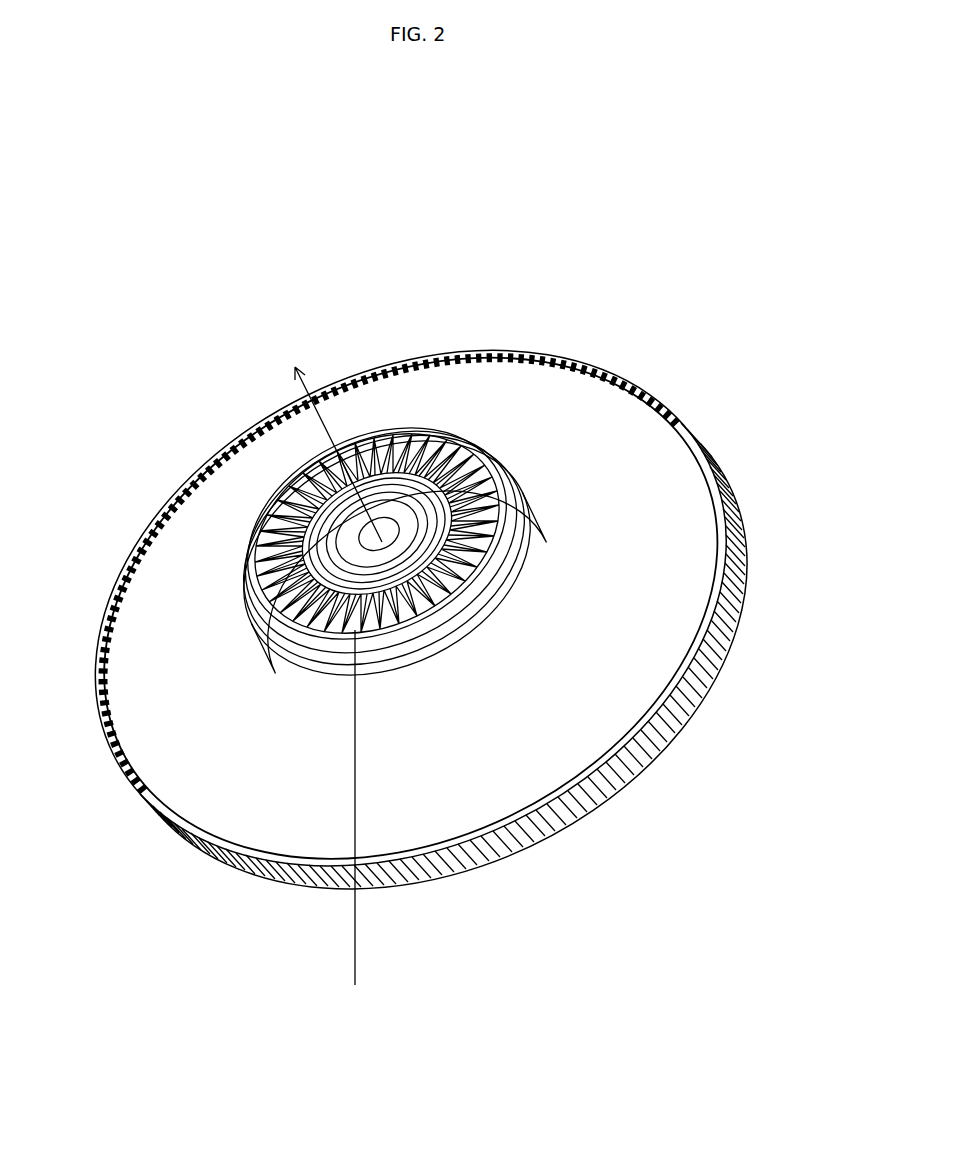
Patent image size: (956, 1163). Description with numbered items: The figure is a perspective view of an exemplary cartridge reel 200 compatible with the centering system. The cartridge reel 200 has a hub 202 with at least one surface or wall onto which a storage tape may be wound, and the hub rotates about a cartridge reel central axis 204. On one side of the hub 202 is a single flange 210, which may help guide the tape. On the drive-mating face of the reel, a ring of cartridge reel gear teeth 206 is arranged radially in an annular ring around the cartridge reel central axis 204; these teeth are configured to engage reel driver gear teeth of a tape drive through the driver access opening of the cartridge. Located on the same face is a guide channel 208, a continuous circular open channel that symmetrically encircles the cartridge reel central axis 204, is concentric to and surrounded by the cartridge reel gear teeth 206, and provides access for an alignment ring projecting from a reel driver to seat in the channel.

The cartridge reel 200 is at (436, 278).
The hub 202 is at (537, 582).
The cartridge reel central axis 204 is at (320, 421).
The cartridge reel gear teeth 206 is at (356, 820).
The guide channel 208 is at (310, 552).
The flange 210 is at (537, 748).